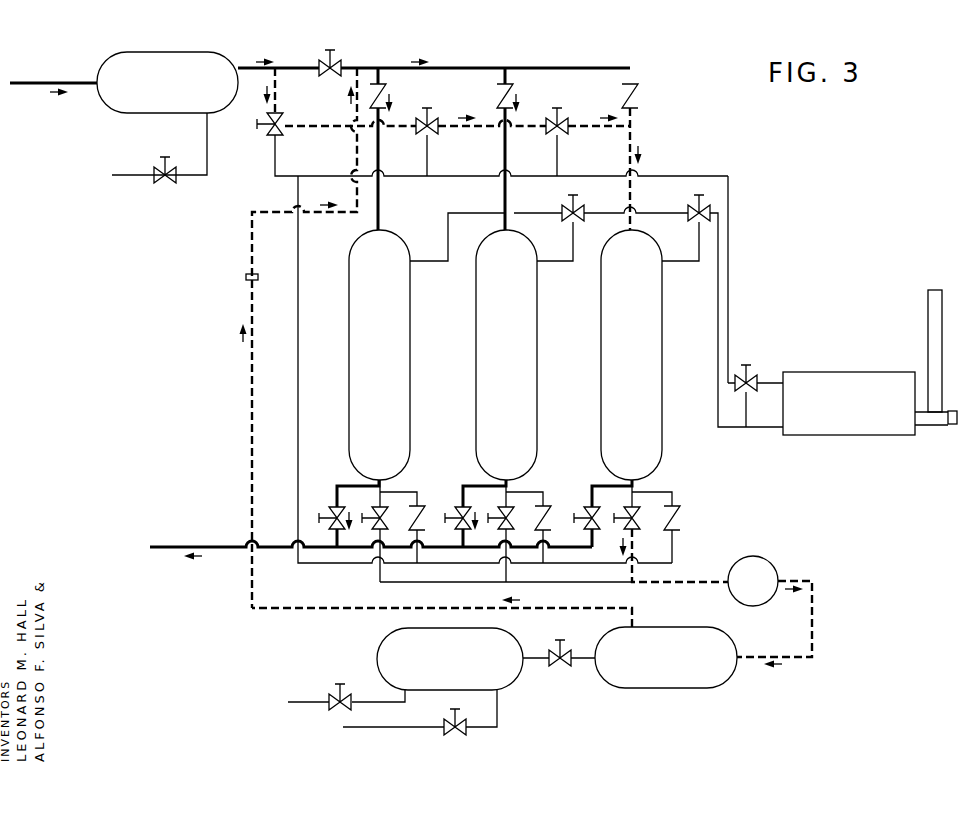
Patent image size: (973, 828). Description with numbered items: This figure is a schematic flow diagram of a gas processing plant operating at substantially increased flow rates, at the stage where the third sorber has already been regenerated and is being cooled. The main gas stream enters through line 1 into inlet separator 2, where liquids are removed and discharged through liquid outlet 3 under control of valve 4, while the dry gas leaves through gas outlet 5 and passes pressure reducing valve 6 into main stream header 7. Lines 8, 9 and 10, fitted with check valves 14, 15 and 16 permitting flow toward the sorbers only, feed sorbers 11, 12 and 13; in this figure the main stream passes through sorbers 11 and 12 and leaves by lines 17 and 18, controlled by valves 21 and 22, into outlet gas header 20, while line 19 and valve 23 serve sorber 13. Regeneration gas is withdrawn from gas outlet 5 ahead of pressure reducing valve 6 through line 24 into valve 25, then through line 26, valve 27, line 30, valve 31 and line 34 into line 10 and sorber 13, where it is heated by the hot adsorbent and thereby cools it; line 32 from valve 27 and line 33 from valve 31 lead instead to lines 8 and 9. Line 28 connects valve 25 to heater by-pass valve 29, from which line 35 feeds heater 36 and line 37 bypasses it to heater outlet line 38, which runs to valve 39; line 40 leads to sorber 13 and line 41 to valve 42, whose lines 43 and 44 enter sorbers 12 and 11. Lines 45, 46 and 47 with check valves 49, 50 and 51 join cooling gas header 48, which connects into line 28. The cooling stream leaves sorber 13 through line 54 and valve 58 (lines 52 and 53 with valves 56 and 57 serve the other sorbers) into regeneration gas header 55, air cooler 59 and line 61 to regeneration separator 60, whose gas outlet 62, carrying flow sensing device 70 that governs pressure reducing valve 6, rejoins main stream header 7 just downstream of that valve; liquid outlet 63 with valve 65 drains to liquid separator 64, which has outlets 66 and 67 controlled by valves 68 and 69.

The line 1 is at (42, 82).
The inlet separator 2 is at (160, 52).
The liquid outlet 3 is at (207, 132).
The valve 4 is at (157, 170).
The gas outlet 5 is at (258, 66).
The pressure reducing valve 6 is at (340, 60).
The main stream header 7 is at (518, 68).
The line 8 is at (385, 206).
The line 9 is at (503, 196).
The line 10 is at (634, 206).
The sorber 11 is at (410, 340).
The sorber 12 is at (537, 340).
The sorber 13 is at (662, 340).
The check valve 14 is at (386, 86).
The check valve 15 is at (513, 86).
The check valve 16 is at (638, 86).
The line 17 is at (340, 484).
The line 18 is at (466, 484).
The line 19 is at (594, 484).
The outlet gas header 20 is at (208, 545).
The valve 21 is at (332, 510).
The valve 22 is at (458, 510).
The valve 23 is at (586, 510).
The line 24 is at (284, 84).
The valve 25 is at (290, 118).
The line 26 is at (320, 130).
The valve 27 is at (446, 110).
The line 28 is at (278, 168).
The heater by-pass valve 29 is at (745, 365).
The line 30 is at (486, 127).
The valve 31 is at (566, 120).
The line 32 is at (430, 165).
The line 33 is at (558, 165).
The line 34 is at (622, 128).
The line 35 is at (766, 372).
The heater 36 is at (820, 372).
The line 37 is at (748, 405).
The heater outlet line 38 is at (726, 430).
The valve 39 is at (706, 200).
The line 40 is at (699, 243).
The line 41 is at (625, 214).
The valve 42 is at (578, 200).
The line 43 is at (573, 250).
The line 44 is at (448, 230).
The line 45 is at (400, 492).
The line 46 is at (524, 492).
The line 47 is at (652, 492).
The cooling gas header 48 is at (668, 584).
The check valve 49 is at (422, 540).
The check valve 50 is at (550, 540).
The check valve 51 is at (680, 550).
The line 52 is at (380, 498).
The line 53 is at (506, 498).
The line 54 is at (632, 498).
The regeneration gas header 55 is at (655, 583).
The valve 56 is at (388, 517).
The valve 57 is at (514, 517).
The valve 58 is at (640, 517).
The air cooler 59 is at (768, 566).
The regeneration separator 60 is at (740, 646).
The line 61 is at (816, 618).
The gas outlet 62 is at (634, 622).
The liquid outlet 63 is at (574, 652).
The liquid separator 64 is at (382, 640).
The valve 65 is at (556, 644).
The outlet 66 is at (396, 708).
The outlet 67 is at (506, 714).
The valve 68 is at (328, 700).
The valve 69 is at (468, 730).
The flow sensing device 70 is at (246, 277).